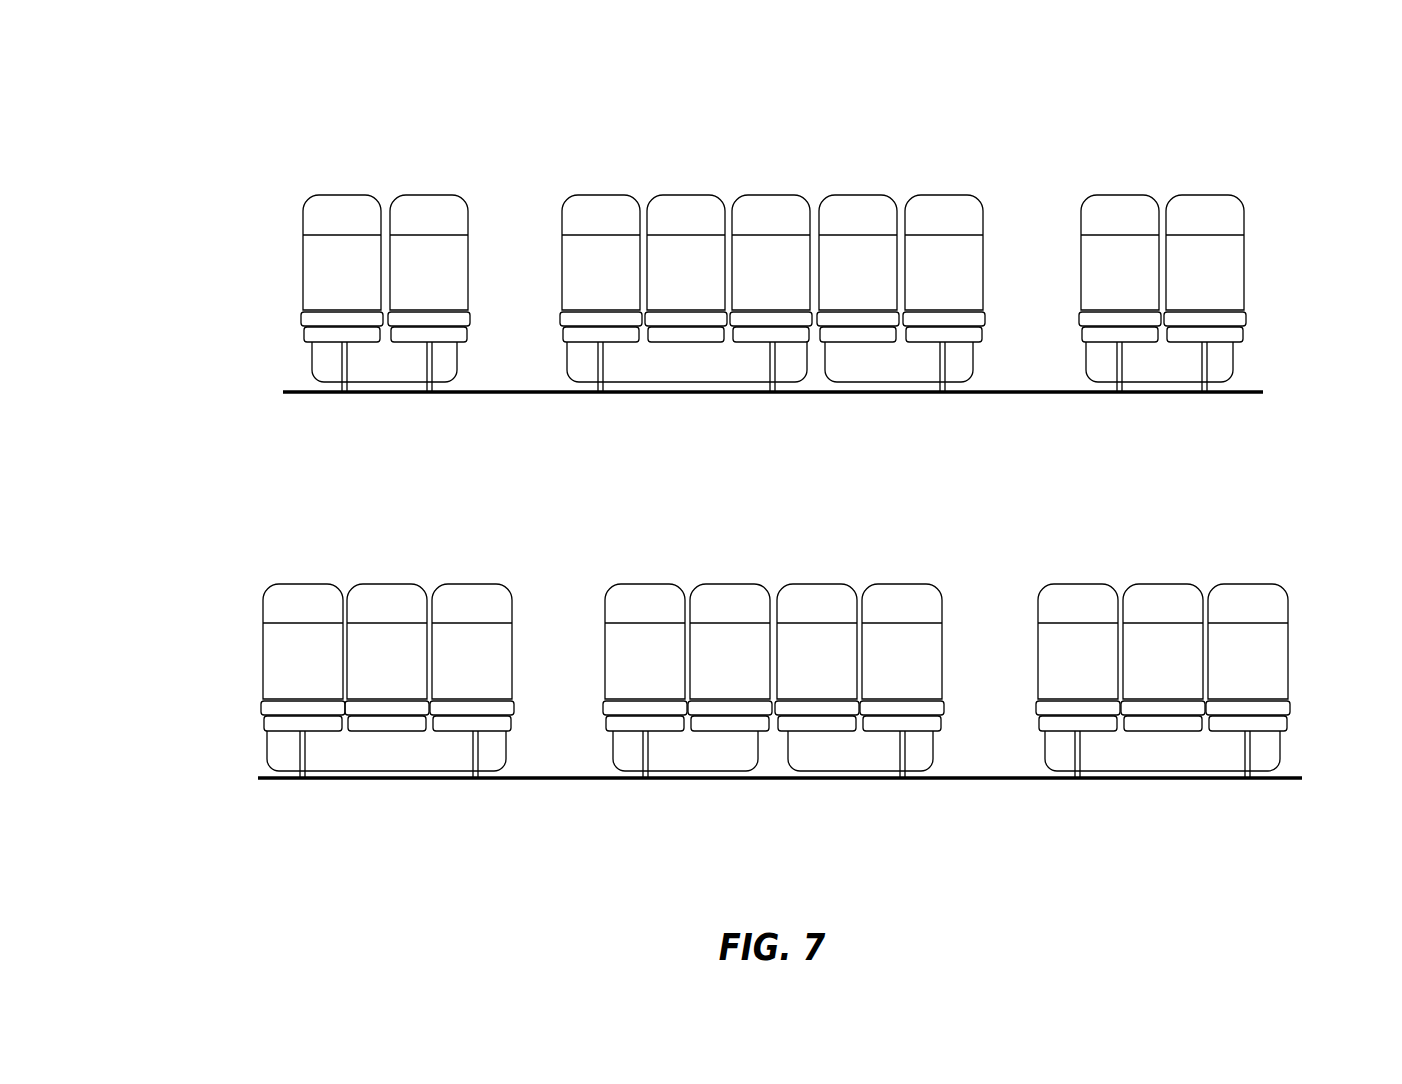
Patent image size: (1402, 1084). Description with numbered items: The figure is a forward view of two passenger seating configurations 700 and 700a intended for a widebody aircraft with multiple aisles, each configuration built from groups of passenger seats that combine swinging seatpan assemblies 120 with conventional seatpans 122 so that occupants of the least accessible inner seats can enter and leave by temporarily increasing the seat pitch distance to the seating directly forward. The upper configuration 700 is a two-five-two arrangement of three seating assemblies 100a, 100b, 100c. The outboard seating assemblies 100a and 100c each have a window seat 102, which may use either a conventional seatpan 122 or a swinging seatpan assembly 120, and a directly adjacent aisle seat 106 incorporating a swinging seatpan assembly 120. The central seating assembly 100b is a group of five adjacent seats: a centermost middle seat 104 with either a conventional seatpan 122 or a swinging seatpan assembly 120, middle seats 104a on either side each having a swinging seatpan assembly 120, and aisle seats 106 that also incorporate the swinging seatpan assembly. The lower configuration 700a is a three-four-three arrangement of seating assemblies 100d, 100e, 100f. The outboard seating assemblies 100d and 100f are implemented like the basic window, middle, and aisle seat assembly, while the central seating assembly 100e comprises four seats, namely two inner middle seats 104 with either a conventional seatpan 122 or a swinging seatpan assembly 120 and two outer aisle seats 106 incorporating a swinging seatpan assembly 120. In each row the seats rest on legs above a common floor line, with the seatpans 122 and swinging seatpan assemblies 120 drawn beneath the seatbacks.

The passenger seating configuration 700 is at (185, 155).
The passenger seating configuration 700a is at (190, 506).
The seating assembly 100a is at (357, 117).
The seating assembly 100b is at (785, 113).
The seating assembly 100c is at (1224, 128).
The seating assembly 100d is at (303, 514).
The seating assembly 100e is at (790, 526).
The seating assembly 100f is at (1268, 520).
The window seat 102 is at (320, 270).
The middle seat 104 is at (776, 260).
The middle seat 104a is at (692, 252).
The aisle seat 106 is at (413, 256).
The swinging seatpan assembly 120 is at (443, 333).
The seatpan 122 is at (333, 333).